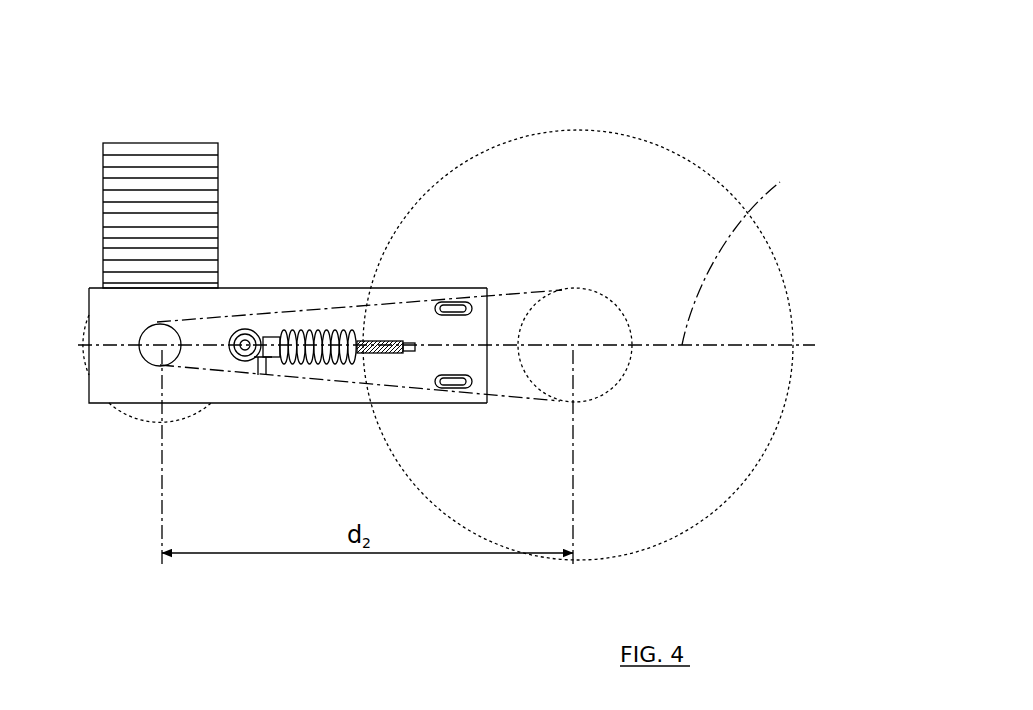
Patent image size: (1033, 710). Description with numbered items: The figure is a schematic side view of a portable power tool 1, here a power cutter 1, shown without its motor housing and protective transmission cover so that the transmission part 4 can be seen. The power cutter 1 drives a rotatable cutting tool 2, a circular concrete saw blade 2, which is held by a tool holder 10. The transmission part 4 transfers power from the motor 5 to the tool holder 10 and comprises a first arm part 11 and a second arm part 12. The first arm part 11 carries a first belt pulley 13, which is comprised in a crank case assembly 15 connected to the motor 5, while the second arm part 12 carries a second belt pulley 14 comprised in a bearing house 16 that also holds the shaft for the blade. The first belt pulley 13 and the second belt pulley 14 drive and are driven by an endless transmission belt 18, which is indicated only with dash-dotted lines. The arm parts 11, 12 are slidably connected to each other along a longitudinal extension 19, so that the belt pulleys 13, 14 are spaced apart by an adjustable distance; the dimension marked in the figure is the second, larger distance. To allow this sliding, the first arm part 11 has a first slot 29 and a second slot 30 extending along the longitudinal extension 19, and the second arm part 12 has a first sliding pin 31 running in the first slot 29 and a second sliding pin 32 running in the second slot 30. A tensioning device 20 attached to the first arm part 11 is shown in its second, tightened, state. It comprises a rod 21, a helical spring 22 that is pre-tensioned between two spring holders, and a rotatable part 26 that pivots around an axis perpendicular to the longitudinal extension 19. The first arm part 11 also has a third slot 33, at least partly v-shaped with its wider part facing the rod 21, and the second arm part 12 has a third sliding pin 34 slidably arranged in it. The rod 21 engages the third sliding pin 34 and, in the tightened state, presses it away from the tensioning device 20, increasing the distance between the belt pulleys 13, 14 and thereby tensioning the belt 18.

The portable power tool 1 is at (188, 68).
The rotatable cutting tool 2 is at (677, 257).
The transmission part 4 is at (270, 272).
The motor 5 is at (182, 173).
The tool holder 10 is at (593, 313).
The first arm part 11 is at (332, 295).
The second arm part 12 is at (500, 310).
The first belt pulley 13 is at (157, 360).
The second belt pulley 14 is at (583, 400).
The crank case assembly 15 is at (146, 372).
The bearing house 16 is at (607, 383).
The endless transmission belt 18 is at (233, 316).
The longitudinal extension 19 is at (748, 253).
The tensioning device 20 is at (300, 373).
The rod 21 is at (373, 343).
The helical spring 22 is at (312, 308).
The rotatable part 26 is at (243, 355).
The first slot 29 is at (463, 308).
The second slot 30 is at (450, 383).
The first sliding pin 31 is at (452, 305).
The second sliding pin 32 is at (467, 387).
The third slot 33 is at (414, 343).
The third sliding pin 34 is at (398, 343).